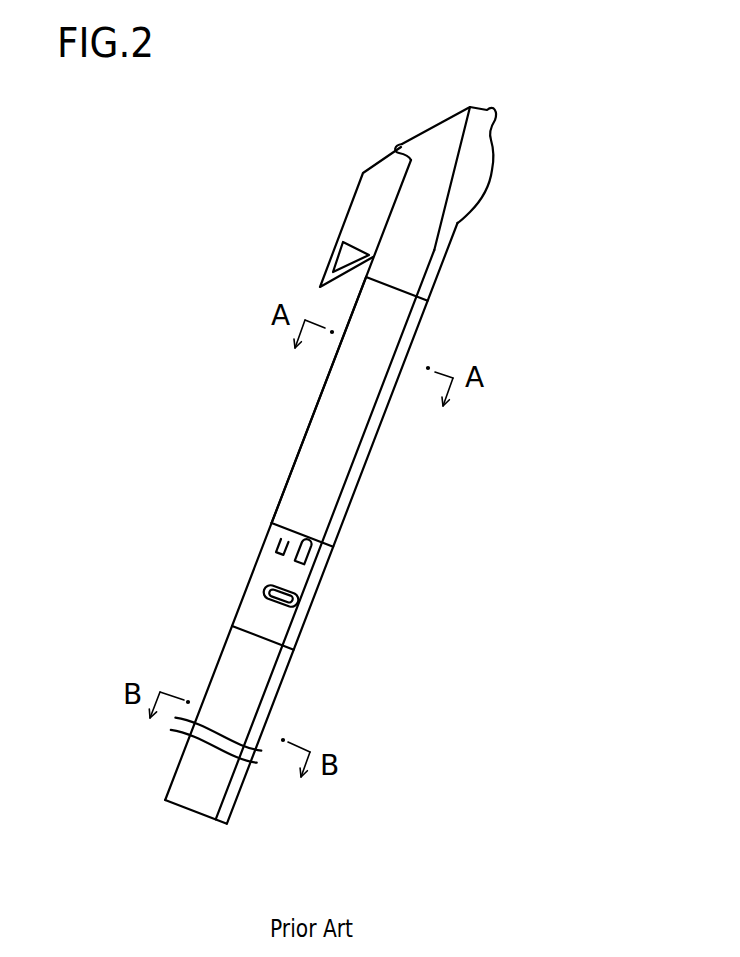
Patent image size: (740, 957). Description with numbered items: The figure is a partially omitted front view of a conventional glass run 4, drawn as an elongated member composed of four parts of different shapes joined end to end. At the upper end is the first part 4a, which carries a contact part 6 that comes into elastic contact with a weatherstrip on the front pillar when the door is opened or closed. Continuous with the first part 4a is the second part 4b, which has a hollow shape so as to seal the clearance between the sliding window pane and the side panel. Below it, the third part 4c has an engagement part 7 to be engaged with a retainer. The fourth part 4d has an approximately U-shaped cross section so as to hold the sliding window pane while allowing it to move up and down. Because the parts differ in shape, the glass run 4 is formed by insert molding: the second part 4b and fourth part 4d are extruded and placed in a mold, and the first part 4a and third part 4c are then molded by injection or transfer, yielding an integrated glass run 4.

The glass run 4 is at (387, 449).
The first part 4a is at (447, 237).
The second part 4b is at (376, 430).
The third part 4c is at (291, 594).
The fourth part 4d is at (275, 703).
The contact part 6 is at (375, 178).
The engagement part 7 is at (265, 585).